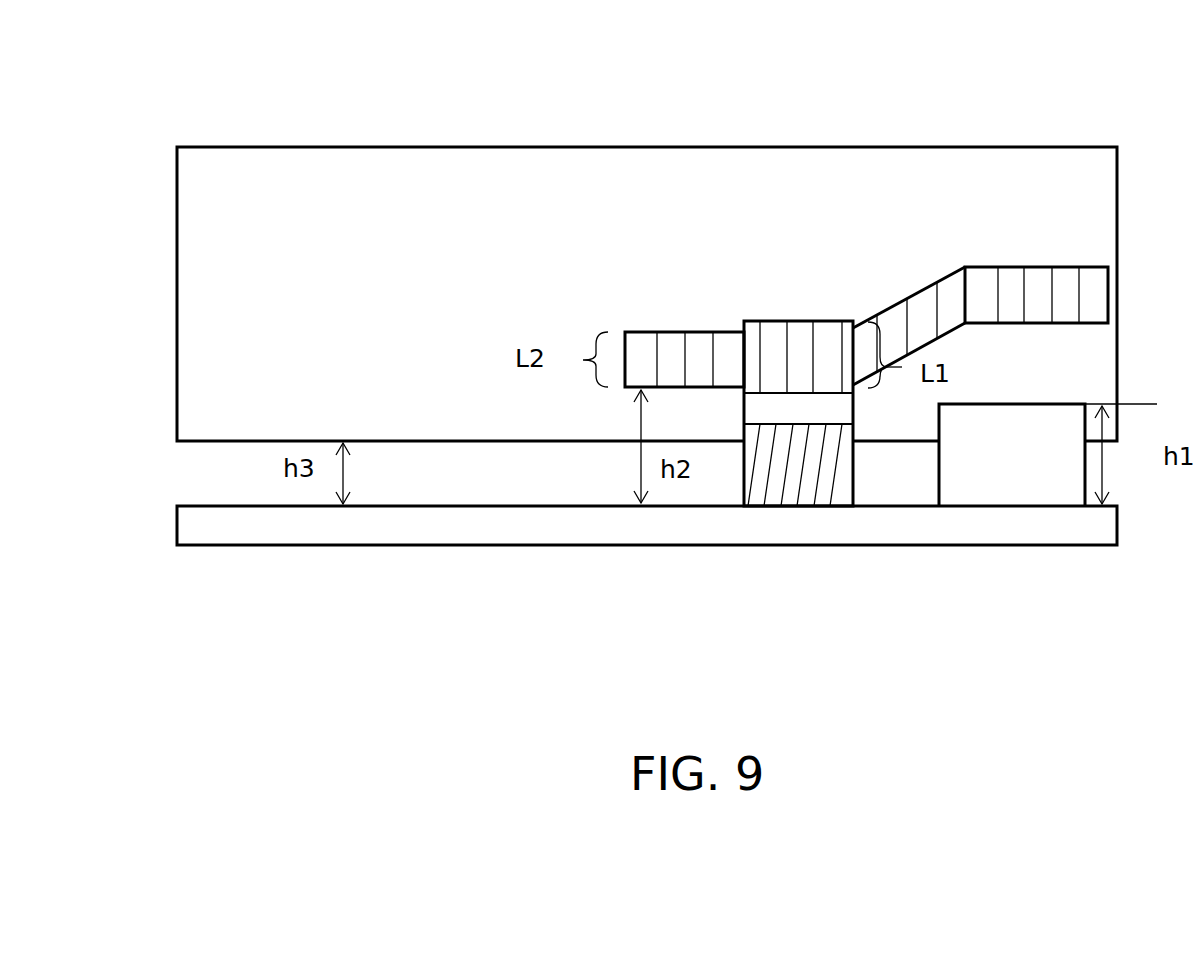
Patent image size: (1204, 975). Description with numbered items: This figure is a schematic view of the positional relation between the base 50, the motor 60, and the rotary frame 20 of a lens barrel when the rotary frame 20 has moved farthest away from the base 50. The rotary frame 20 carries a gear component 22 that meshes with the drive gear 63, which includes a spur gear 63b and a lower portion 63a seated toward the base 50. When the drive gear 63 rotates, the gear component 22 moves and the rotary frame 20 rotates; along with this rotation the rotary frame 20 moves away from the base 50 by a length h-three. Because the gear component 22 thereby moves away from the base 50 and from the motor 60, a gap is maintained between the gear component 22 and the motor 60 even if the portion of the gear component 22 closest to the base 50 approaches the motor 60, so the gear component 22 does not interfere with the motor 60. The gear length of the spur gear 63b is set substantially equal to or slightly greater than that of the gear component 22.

The rotary frame 20 is at (320, 128).
The gear component 22 is at (642, 350).
The base 50 is at (338, 522).
The motor 60 is at (1003, 448).
The drive gear 63 is at (777, 312).
The base portion of coil unit 63a is at (808, 485).
The spur gear 63b is at (833, 338).